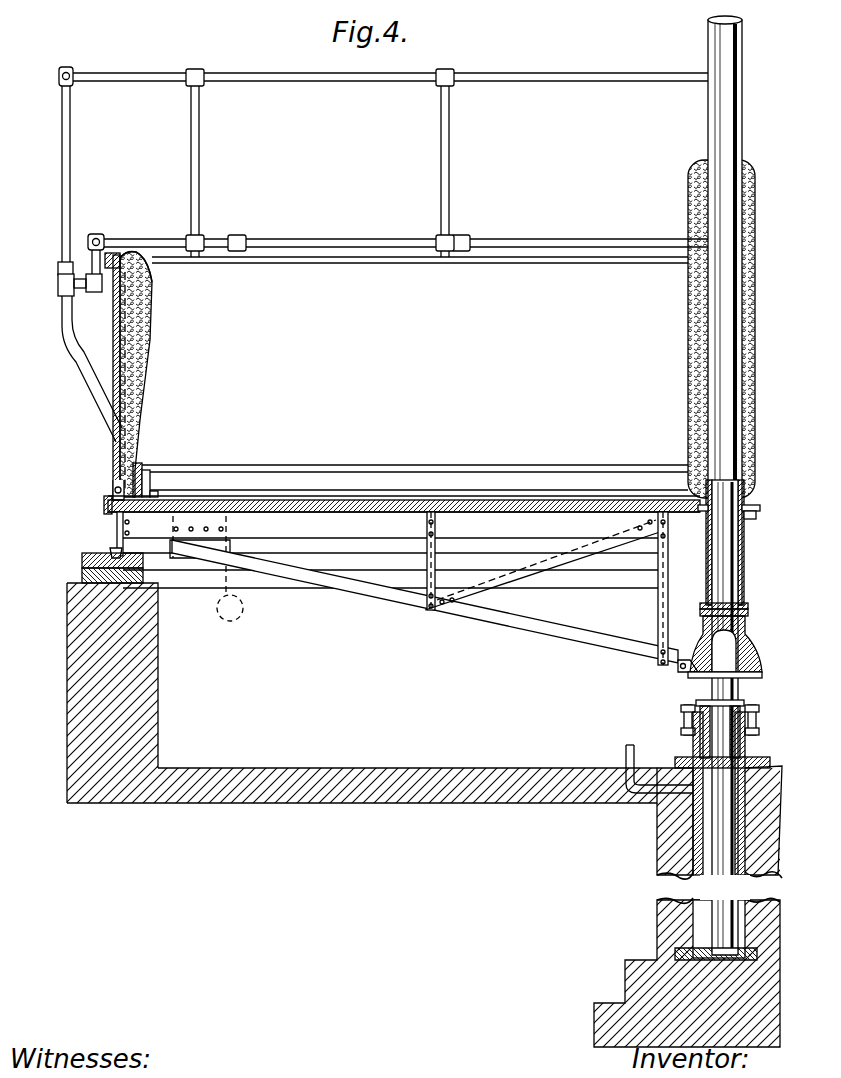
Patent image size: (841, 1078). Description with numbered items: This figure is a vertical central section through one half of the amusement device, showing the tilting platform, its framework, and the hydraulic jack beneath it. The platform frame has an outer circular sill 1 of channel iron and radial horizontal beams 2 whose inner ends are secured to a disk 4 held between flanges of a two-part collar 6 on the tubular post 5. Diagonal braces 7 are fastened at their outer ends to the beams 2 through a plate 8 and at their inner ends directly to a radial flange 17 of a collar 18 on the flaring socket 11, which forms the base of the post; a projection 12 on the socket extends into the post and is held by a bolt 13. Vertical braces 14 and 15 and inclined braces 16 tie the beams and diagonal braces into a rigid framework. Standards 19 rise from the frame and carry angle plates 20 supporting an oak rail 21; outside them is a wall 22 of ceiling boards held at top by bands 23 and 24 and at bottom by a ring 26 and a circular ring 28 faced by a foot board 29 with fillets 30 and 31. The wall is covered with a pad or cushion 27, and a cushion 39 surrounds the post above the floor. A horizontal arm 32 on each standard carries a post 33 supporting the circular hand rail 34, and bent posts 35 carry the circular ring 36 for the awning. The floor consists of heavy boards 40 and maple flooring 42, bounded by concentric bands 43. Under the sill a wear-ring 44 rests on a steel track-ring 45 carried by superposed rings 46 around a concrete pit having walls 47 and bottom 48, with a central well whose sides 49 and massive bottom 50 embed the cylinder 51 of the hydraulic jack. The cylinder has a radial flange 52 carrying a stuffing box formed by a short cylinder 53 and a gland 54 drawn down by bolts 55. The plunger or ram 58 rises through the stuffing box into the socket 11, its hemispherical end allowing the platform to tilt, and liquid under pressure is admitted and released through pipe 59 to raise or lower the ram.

The outer circular sill 1 is at (117, 527).
The horizontal beams 2 is at (388, 530).
The disk 4 is at (752, 518).
The tubular post 5 is at (722, 118).
The two-part collar 6 is at (746, 508).
The diagonal braces 7 is at (562, 632).
The plate 8 is at (230, 608).
The flaring socket 11 is at (758, 638).
The projection 12 is at (749, 613).
The bolt 13 is at (746, 606).
The vertical braces 14 is at (430, 572).
The vertical braces 15 is at (660, 592).
The inclined braces 16 is at (556, 558).
The radial flange 17 is at (764, 665).
The collar 18 is at (692, 665).
The standards 19 is at (140, 388).
The angle plate 20 is at (138, 258).
The rail 21 is at (114, 262).
The circular wall 22 is at (113, 329).
The circular band 23 is at (88, 281).
The circular band 24 is at (58, 280).
The ring 26 is at (118, 480).
The pad or cushion 27 is at (152, 330).
The circular ring 28 is at (152, 472).
The foot board 29 is at (150, 484).
The fillet 30 is at (143, 469).
The fillet 31 is at (158, 496).
The horizontal arm 32 is at (80, 292).
The post 33 is at (92, 254).
The circular hand rail 34 is at (101, 236).
The post 35 is at (448, 160).
The circular ring 36 is at (383, 68).
The cushion 39 is at (688, 372).
The layer of heavy boards 40 is at (322, 514).
The layer of maple flooring 42 is at (292, 495).
The concentric bands 43 is at (105, 504).
The wear-ring 44 is at (110, 552).
The track-ring 45 is at (140, 553).
The superposed rings 46 is at (82, 570).
The pit walls 47 is at (80, 661).
The pit bottom 48 is at (292, 778).
The well sides 49 is at (660, 840).
The well bottom 50 is at (660, 963).
The cylinder 51 is at (700, 862).
The radial flange 52 is at (760, 757).
The short cylinder 53 is at (692, 746).
The gland 54 is at (742, 708).
The bolts 55 is at (684, 717).
The plunger or ram 58 is at (712, 694).
The pipe 59 is at (660, 785).